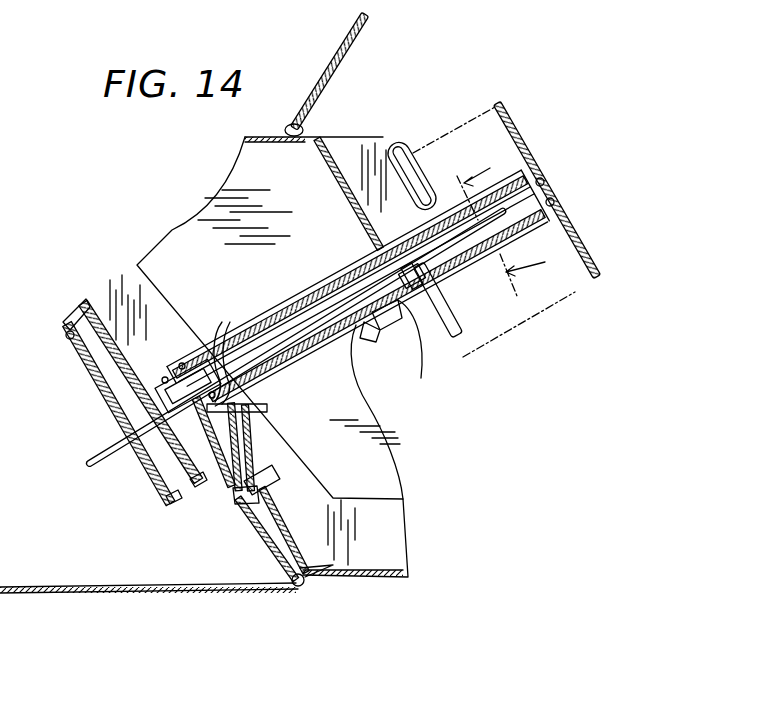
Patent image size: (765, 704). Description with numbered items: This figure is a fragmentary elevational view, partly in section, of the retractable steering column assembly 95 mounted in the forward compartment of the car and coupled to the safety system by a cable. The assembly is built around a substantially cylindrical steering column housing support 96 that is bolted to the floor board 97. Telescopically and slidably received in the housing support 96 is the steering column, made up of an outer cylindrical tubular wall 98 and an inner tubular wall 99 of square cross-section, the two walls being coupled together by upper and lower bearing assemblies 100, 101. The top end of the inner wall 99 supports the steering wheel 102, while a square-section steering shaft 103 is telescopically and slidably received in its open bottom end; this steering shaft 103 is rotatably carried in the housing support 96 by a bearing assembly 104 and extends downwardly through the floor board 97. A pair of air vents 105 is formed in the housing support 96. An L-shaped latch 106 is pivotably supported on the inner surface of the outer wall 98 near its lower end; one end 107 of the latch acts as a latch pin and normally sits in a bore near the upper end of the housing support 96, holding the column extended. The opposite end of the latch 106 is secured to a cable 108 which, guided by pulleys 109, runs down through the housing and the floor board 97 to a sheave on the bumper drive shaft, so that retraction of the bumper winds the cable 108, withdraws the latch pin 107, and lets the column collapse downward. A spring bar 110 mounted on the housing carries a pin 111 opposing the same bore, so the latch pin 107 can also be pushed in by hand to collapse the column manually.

The retractable steering column assembly 95 is at (456, 419).
The steering column housing support 96 is at (294, 307).
The floor board 97 is at (106, 322).
The outer cylindrical tubular wall 98 is at (453, 222).
The inner tubular wall 99 is at (432, 266).
The upper bearing assembly 100 is at (544, 172).
The lower bearing assembly 101 is at (377, 183).
The steering wheel 102 is at (510, 113).
The steering shaft 103 is at (100, 470).
The bearing assembly 104 is at (178, 388).
The air vents 105 is at (222, 330).
The L-shaped latch 106 is at (358, 268).
The latch pin 107 is at (380, 336).
The cable 108 is at (118, 592).
The pulleys 109 is at (262, 407).
The spring bar 110 is at (396, 412).
The pin 111 is at (430, 360).